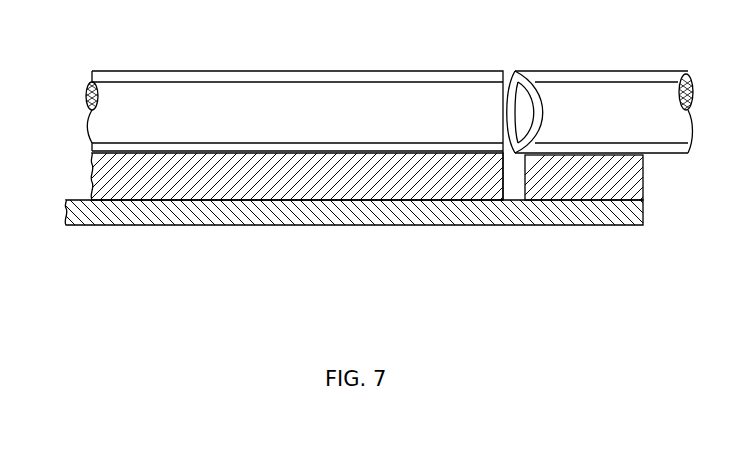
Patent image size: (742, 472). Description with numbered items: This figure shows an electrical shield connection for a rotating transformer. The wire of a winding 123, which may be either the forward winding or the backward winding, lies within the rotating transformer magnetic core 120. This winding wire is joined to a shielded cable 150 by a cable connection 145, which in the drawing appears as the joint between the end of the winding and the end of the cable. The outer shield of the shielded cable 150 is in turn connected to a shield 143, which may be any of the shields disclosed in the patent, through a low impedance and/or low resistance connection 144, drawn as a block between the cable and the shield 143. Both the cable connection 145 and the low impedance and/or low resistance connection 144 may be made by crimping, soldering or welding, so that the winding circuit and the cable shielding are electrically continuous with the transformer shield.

The winding 123 is at (265, 92).
The shielded cable 150 is at (615, 78).
The cable connection 145 is at (509, 70).
The low impedance and/or low resistance connection 144 is at (633, 173).
The rotating transformer magnetic core 120 is at (289, 190).
The shield 143 is at (178, 227).